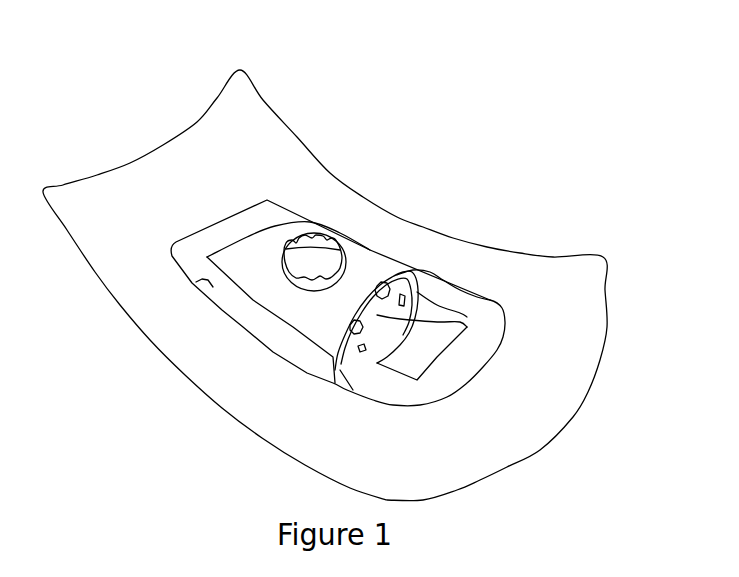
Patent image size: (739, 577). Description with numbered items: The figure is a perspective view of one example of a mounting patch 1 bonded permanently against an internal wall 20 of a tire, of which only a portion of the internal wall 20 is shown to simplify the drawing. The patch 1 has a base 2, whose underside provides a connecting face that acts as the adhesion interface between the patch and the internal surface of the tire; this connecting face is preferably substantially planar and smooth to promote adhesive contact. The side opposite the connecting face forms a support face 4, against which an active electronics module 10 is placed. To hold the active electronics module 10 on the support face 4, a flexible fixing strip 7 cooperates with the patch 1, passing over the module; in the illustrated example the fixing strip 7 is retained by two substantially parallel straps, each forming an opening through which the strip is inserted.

The mounting patch 1 is at (433, 215).
The base 2 is at (457, 360).
The support face 4 is at (247, 240).
The flexible fixing strip 7 is at (260, 273).
The active electronics module 10 is at (493, 302).
The internal wall 20 is at (190, 157).